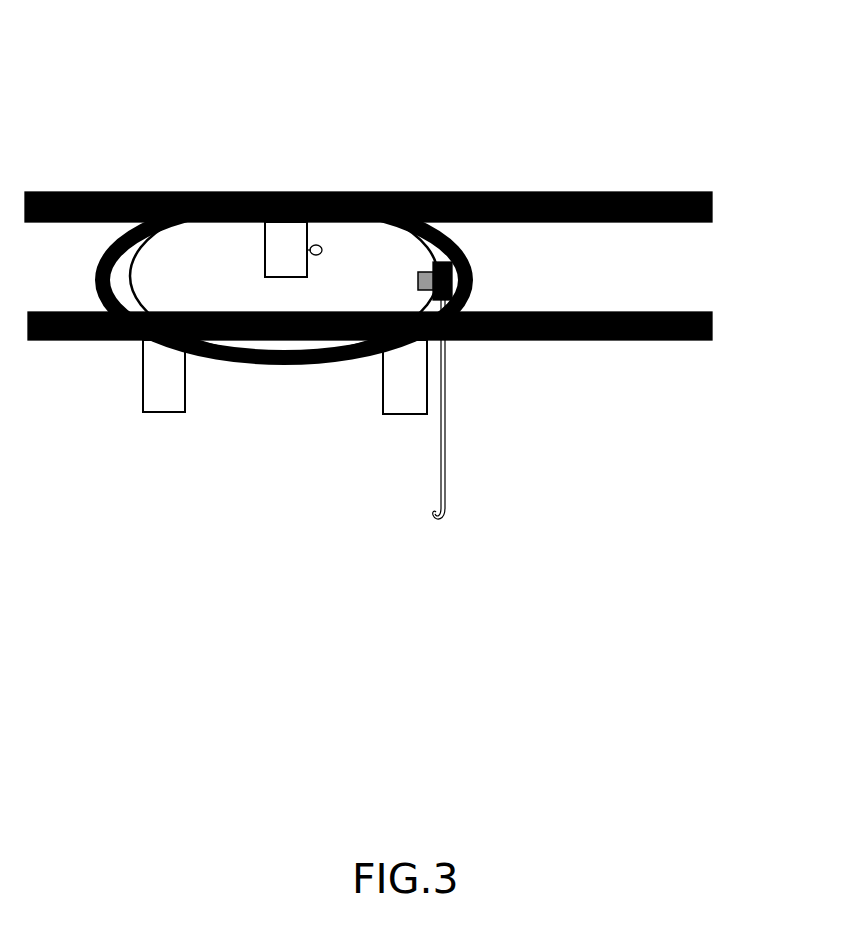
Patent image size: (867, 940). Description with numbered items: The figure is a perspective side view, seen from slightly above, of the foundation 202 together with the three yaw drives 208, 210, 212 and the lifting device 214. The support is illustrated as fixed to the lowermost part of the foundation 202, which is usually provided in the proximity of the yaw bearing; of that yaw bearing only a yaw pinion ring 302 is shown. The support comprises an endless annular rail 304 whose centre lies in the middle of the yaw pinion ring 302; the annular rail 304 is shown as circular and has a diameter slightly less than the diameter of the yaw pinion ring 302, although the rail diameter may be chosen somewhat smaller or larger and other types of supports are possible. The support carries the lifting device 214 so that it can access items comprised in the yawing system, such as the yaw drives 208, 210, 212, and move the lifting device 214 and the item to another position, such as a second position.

The foundation 202 is at (537, 192).
The yaw drive 208 is at (152, 412).
The yaw drive 210 is at (291, 242).
The yaw drive 212 is at (412, 414).
The lifting device 214 is at (418, 280).
The yaw pinion ring 302 is at (472, 284).
The annular rail 304 is at (138, 265).